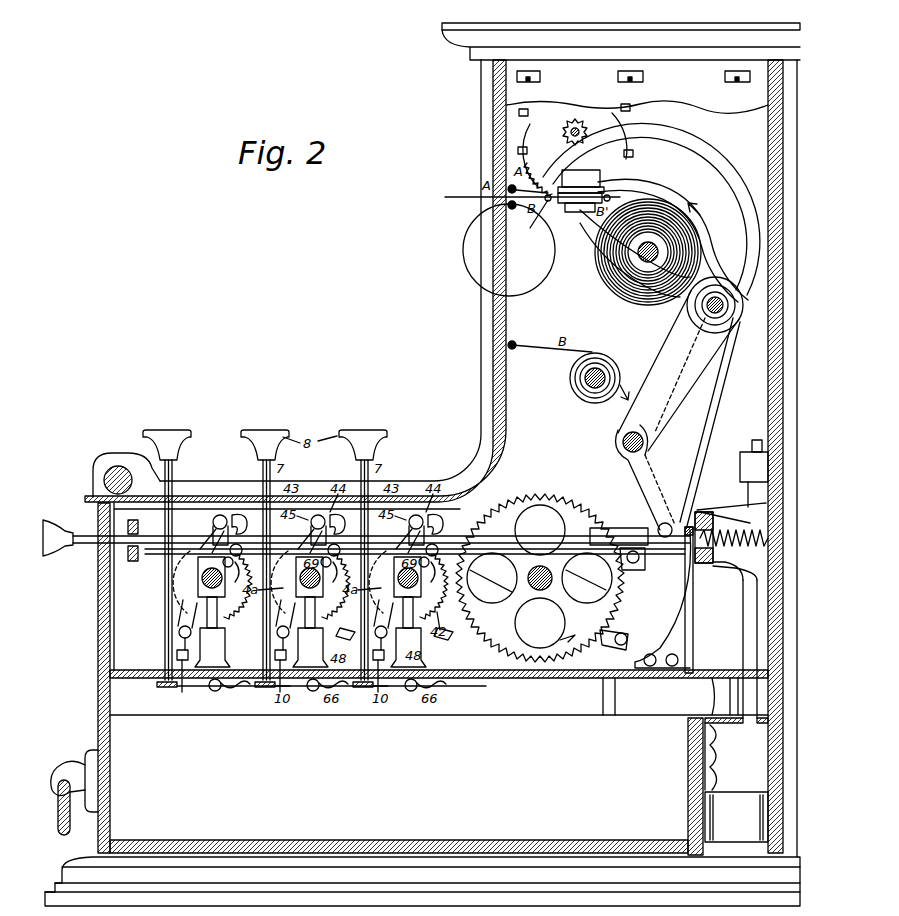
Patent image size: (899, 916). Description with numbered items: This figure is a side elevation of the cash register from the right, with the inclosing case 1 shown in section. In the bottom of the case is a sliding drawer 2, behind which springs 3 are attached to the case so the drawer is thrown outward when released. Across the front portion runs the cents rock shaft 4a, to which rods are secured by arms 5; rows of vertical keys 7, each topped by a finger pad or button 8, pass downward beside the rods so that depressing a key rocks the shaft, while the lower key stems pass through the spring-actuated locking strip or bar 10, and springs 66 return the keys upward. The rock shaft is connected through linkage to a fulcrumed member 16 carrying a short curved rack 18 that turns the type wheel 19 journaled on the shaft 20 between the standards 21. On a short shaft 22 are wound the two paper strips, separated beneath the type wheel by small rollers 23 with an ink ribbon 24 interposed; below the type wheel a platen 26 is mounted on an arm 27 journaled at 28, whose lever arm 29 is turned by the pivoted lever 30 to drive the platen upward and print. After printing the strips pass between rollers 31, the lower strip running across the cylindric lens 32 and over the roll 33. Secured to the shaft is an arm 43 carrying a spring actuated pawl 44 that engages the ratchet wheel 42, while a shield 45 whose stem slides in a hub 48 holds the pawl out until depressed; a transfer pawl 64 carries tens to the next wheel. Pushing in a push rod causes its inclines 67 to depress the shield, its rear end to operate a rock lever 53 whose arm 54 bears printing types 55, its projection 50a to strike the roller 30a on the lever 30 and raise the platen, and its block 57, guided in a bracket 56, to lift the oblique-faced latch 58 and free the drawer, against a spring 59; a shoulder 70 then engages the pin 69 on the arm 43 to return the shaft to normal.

The inclosing case 1 is at (492, 372).
The sliding drawer 2 is at (422, 704).
The springs 3 is at (736, 780).
The arms 5 is at (178, 566).
The keys 7 is at (223, 573).
The finger pad or button 8 is at (191, 440).
The strip or bar 10 is at (184, 683).
The member 16 is at (676, 157).
The short curved rack 18 is at (539, 173).
The type wheel 19 is at (575, 145).
The shaft 20 is at (567, 126).
The standards 21 is at (637, 252).
The short shaft 22 is at (622, 262).
The small rollers 23 is at (562, 206).
The ink ribbon 24 is at (576, 190).
The platen 26 is at (592, 205).
The arm 27 is at (592, 242).
The journal 28 is at (722, 316).
The lever arm 29 is at (668, 358).
The pivoted lever 30 is at (632, 431).
The roller 30a is at (670, 523).
The rollers 31 is at (508, 188).
The cylindric lens 32 is at (509, 250).
The roll 33 is at (513, 344).
The ratchet wheel 42 is at (180, 608).
The arm 43 is at (207, 528).
The spring actuated pawl 44 is at (229, 512).
The shield 45 is at (210, 528).
The hub 48 is at (220, 632).
The projection 50a is at (620, 528).
The rock lever 53 is at (710, 422).
The arm 54 is at (715, 295).
The printing types 55 is at (628, 180).
The bracket 56 is at (694, 648).
The block 57 is at (726, 615).
The oblique-faced latch 58 is at (726, 507).
The spring 59 is at (730, 549).
The spring-actuated pawl 64 is at (350, 634).
The springs 66 is at (229, 692).
The inclines 67 is at (155, 548).
The pin 69 is at (215, 576).
The shoulder 70 is at (158, 550).
The rock shaft 4a is at (183, 600).